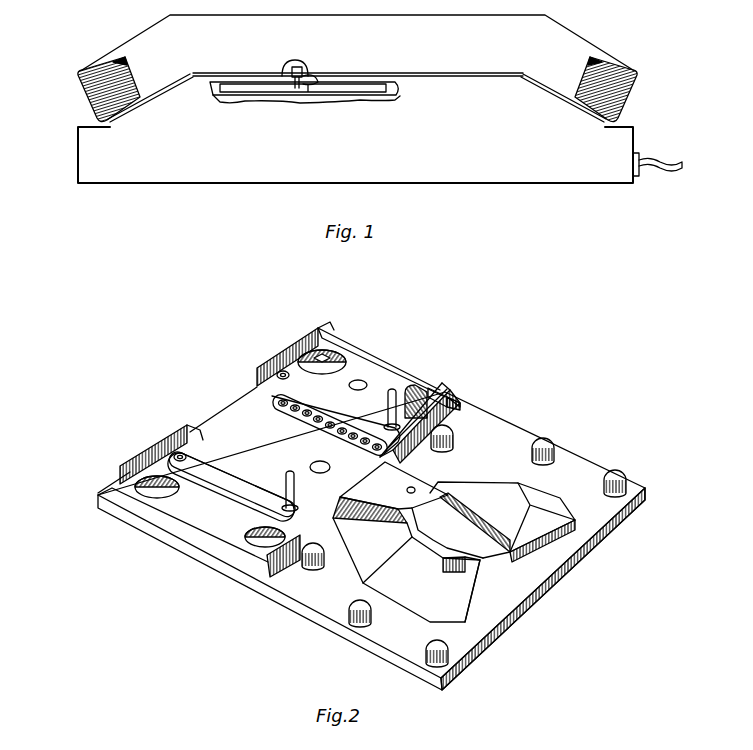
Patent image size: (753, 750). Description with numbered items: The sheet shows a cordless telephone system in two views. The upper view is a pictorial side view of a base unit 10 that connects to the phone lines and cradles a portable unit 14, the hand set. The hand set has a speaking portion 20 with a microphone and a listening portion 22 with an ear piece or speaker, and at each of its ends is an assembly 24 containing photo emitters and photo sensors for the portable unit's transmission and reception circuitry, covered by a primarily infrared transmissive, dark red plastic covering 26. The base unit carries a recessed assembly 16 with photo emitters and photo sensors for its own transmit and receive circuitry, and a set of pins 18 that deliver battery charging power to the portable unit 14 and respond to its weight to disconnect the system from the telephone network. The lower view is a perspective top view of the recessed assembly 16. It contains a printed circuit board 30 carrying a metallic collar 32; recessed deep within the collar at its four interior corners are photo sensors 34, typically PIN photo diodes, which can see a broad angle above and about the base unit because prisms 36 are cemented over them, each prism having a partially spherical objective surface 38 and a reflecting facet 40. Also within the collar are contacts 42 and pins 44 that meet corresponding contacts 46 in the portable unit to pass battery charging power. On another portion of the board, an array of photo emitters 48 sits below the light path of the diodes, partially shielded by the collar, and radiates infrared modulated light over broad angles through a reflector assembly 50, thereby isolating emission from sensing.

In FIG. 1, the base unit 10 is at (357, 154).
In FIG. 1, the portable unit 14 is at (480, 18).
In FIG. 1, the recessed assembly 16 is at (330, 97).
In FIG. 2, the recessed assembly 16 is at (592, 572).
In FIG. 1, the pins 18 is at (320, 74).
In FIG. 1, the speaking portion 20 is at (555, 101).
In FIG. 1, the listening portion 22 is at (152, 103).
In FIG. 1, the assembly 24 is at (88, 98).
In FIG. 1, the plastic covering 26 is at (118, 62).
In FIG. 2, the printed circuit board 30 is at (497, 612).
In FIG. 2, the metallic collar 32 is at (463, 397).
In FIG. 2, the photo sensors 34 is at (150, 462).
In FIG. 2, the prisms 36 is at (350, 354).
In FIG. 2, the objective surfaces 38 is at (173, 445).
In FIG. 2, the reflecting facets 40 is at (308, 337).
In FIG. 2, the contacts 42 is at (303, 387).
In FIG. 2, the pins 44 is at (392, 387).
In FIG. 1, the contacts 46 is at (303, 64).
In FIG. 2, the photo emitters 48 is at (445, 447).
In FIG. 2, the reflector assembly 50 is at (487, 550).